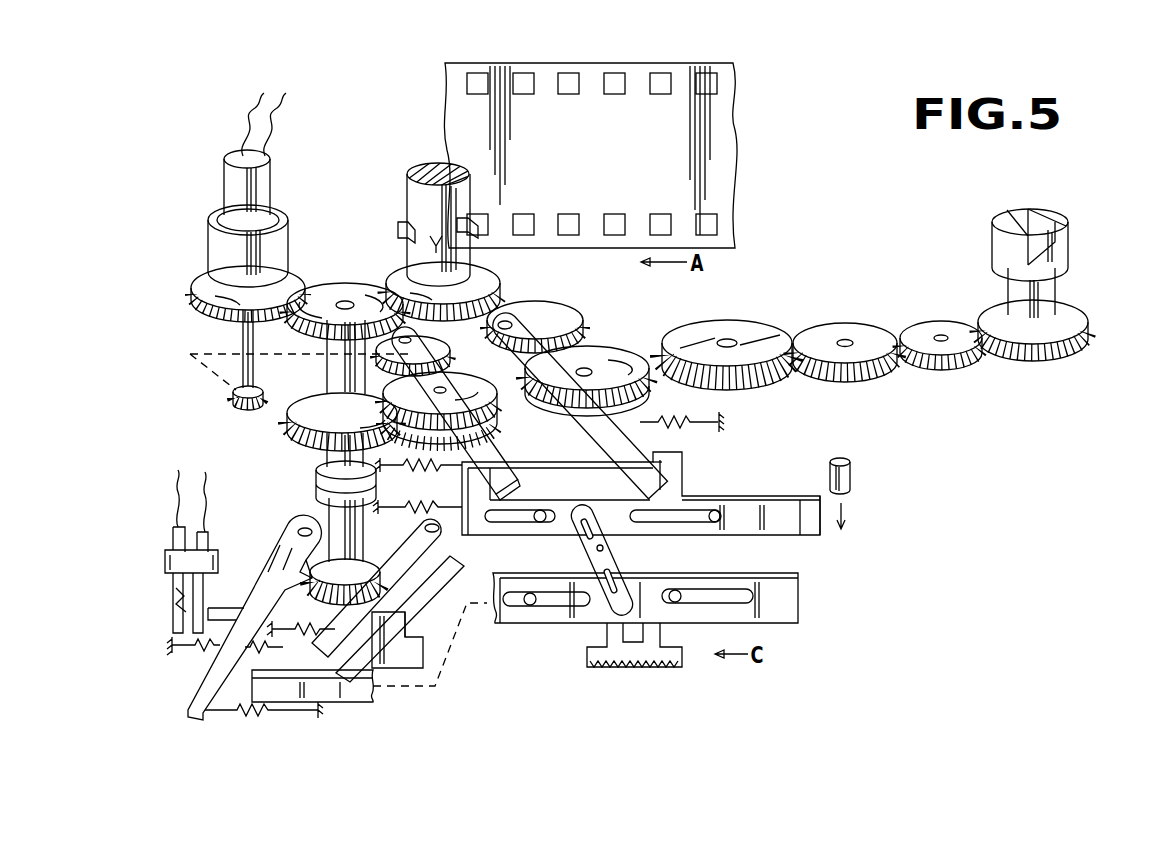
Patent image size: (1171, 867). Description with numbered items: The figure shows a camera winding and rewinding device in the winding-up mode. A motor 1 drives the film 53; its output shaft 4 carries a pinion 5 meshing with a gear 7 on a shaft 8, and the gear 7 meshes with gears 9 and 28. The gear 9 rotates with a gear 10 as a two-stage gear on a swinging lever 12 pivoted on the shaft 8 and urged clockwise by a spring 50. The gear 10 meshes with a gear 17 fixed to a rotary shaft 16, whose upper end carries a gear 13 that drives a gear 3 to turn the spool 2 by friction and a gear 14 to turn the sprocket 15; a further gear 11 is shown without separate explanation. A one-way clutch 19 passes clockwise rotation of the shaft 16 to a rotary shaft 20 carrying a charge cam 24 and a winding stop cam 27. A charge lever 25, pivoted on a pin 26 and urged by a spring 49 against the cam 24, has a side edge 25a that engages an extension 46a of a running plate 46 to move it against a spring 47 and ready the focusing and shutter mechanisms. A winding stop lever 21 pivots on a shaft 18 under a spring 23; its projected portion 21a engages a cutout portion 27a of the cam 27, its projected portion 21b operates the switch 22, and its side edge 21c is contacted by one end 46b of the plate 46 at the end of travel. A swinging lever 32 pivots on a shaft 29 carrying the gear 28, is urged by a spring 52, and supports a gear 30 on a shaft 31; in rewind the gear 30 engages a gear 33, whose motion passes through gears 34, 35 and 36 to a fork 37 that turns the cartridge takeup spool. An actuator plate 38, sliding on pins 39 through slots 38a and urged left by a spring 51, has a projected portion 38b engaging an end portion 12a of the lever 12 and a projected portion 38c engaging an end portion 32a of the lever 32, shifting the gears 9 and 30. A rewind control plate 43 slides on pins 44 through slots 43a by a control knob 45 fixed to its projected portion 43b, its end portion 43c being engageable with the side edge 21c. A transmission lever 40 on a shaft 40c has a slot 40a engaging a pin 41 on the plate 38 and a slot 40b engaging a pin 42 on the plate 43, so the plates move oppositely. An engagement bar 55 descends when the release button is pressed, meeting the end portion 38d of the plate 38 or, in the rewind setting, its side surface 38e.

The motor 1 is at (233, 188).
The spool 2 is at (218, 255).
The gear 3 is at (205, 292).
The output shaft 4 is at (245, 343).
The pinion 5 is at (238, 403).
The gear 7 is at (378, 300).
The shaft 8 is at (333, 372).
The gear 9 is at (485, 403).
The gear 10 is at (430, 445).
The gear 11 is at (478, 425).
The swinging lever 12 is at (490, 450).
The end portion 12a is at (500, 480).
The gear 13 is at (330, 292).
The gear 14 is at (397, 280).
The sprocket 15 is at (412, 190).
The rotary shaft 16 is at (333, 360).
The gear 17 is at (295, 412).
The shaft 18 is at (297, 530).
The one-way clutch 19 is at (318, 472).
The rotary shaft 20 is at (333, 520).
The winding stop lever 21 is at (205, 697).
The projected portion 21a is at (287, 578).
The projected portion 21b is at (180, 607).
The side edge 21c is at (222, 673).
The switch 22 is at (165, 560).
The spring 23 is at (290, 712).
The charge cam 24 is at (403, 578).
The charge lever 25 is at (428, 550).
The side edge 25a is at (390, 660).
The pivot 26 is at (405, 540).
The winding stop cam 27 is at (393, 600).
The cutout portion 27a is at (300, 570).
The gear 28 is at (543, 307).
The shaft 29 is at (505, 320).
The gear 30 is at (625, 347).
The shaft 31 is at (600, 352).
The swinging lever 32 is at (636, 415).
The end portion 32a is at (655, 470).
The gear 33 is at (748, 333).
The gear 34 is at (850, 330).
The gear 35 is at (937, 326).
The gear 36 is at (1082, 318).
The fork 37 is at (1068, 235).
The actuator plate 38 is at (742, 507).
The slots 38a is at (515, 522).
The projected portion 38b is at (520, 478).
The projected portion 38c is at (678, 462).
The end portion 38d is at (822, 520).
The side surface 38e is at (803, 497).
The pins 39 is at (546, 522).
The transmission lever 40 is at (607, 547).
The slot 40a is at (584, 507).
The slot 40b is at (606, 585).
The shaft 40c is at (615, 572).
The pin 41 is at (601, 530).
The pin 42 is at (608, 604).
The rewind control plate 43 is at (355, 690).
The slots 43a is at (515, 602).
The projected portion 43b is at (632, 630).
The end portion 43c is at (258, 712).
The pins 44 is at (528, 605).
The control knob 45 is at (662, 658).
The running plate 46 is at (403, 653).
The extension 46a is at (395, 628).
The end 46b is at (340, 700).
The spring 47 is at (172, 644).
The spring 49 is at (300, 655).
The spring 50 is at (462, 512).
The spring 51 is at (430, 506).
The spring 52 is at (695, 422).
The film 53 is at (725, 158).
The engagement member 55 is at (852, 472).